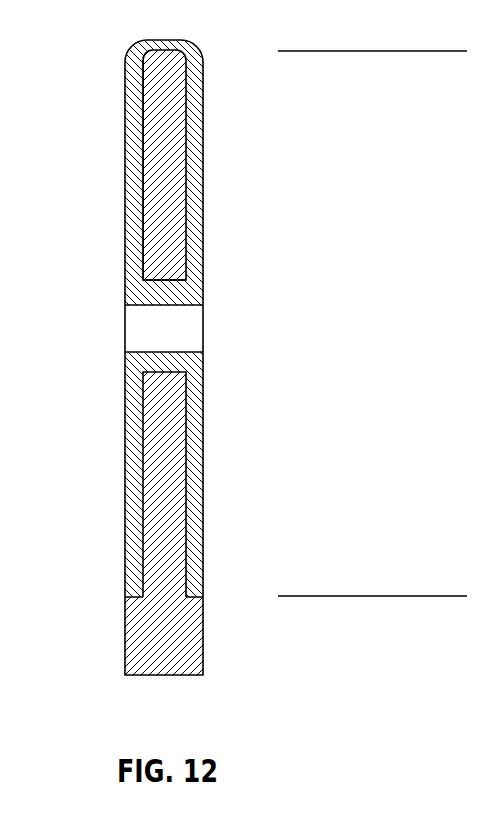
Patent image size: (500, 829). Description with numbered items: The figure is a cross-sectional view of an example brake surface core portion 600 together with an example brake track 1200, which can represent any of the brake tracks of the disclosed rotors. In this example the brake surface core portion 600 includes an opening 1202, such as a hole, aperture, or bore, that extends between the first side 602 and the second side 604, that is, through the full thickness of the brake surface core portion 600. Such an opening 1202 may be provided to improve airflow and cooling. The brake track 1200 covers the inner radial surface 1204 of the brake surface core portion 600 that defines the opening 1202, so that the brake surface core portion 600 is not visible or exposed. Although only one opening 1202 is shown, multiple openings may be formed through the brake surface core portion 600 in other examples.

The brake surface core portion 600 is at (373, 580).
The first side 602 is at (187, 200).
The second side 604 is at (145, 212).
The brake track 1200 is at (137, 132).
The opening 1202 is at (114, 314).
The inner radial surface 1204 is at (163, 280).